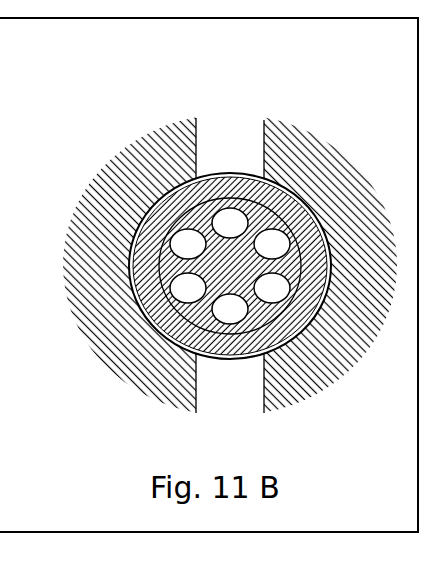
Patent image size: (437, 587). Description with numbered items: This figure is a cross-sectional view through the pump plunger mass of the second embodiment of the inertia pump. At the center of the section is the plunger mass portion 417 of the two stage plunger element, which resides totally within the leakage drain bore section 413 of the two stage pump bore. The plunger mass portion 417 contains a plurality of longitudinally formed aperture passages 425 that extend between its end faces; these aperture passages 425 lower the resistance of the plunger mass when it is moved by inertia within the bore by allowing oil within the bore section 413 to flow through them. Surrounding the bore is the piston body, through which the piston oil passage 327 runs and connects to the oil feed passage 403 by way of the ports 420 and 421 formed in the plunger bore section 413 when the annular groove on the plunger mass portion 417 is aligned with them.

The oil feed passage 403 is at (241, 405).
The piston oil passage 327 is at (232, 137).
The port 421 is at (225, 363).
The port 420 is at (221, 172).
The plunger mass portion 417 is at (245, 173).
The leakage drain bore section 413 is at (150, 212).
The aperture passages 425 is at (273, 298).